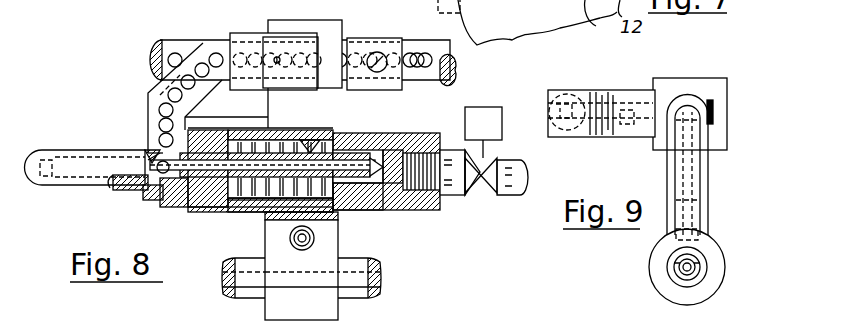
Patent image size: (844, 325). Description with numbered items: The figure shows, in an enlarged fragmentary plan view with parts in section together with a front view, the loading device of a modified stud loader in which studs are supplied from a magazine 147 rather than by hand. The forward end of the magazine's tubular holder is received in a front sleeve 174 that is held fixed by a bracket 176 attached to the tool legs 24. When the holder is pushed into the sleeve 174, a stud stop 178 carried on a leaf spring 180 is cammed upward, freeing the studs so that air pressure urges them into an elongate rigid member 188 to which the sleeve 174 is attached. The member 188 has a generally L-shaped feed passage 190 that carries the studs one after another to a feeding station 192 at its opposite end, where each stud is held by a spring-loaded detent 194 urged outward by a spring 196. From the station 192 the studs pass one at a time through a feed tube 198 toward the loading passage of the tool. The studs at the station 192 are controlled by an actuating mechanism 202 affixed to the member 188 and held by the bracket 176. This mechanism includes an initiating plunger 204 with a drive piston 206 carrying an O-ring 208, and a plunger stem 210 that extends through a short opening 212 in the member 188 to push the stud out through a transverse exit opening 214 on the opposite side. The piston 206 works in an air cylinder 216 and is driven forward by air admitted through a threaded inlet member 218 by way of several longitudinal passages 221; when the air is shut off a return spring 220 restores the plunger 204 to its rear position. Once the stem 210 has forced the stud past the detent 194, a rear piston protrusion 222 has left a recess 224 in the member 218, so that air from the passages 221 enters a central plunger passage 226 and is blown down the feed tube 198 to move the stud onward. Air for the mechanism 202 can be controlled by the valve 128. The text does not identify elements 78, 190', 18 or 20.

In FIG. 8, the tool legs 24 is at (167, 40).
In FIG. 8, the front sleeve 174 is at (245, 33).
In FIG. 8, the stud stop 178 is at (277, 58).
In FIG. 8, the leaf spring 180 is at (380, 15).
In FIG. 8, the ball 78 is at (417, 52).
In FIG. 9, the ball 78 is at (692, 274).
In FIG. 8, the magazine 147 is at (442, 88).
In FIG. 9, the magazine 147 is at (577, 96).
In FIG. 8, the valve 128 is at (482, 110).
In FIG. 8, the elongate rigid member 188 is at (150, 95).
In FIG. 9, the elongate rigid member 188 is at (632, 90).
In FIG. 8, the feed passage 190 is at (163, 98).
In FIG. 8, the short opening 212 is at (160, 148).
In FIG. 8, the transverse exit opening 214 is at (145, 160).
In FIG. 8, the drive piston 206 is at (312, 160).
In FIG. 8, the initiating plunger 204 is at (250, 133).
In FIG. 8, the central plunger passage 226 is at (310, 140).
In FIG. 8, the O-ring 208 is at (320, 148).
In FIG. 8, the actuating mechanism 202 is at (381, 132).
In FIG. 9, the actuating mechanism 202 is at (700, 80).
In FIG. 8, the rear piston protrusion 222 is at (378, 136).
In FIG. 8, the feed tube 198 is at (72, 187).
In FIG. 9, the feed tube 198 is at (708, 165).
In FIG. 8, the feeding station 192 is at (120, 190).
In FIG. 8, the spring-loaded detent 194 is at (128, 198).
In FIG. 8, the spring 196 is at (128, 210).
In FIG. 9, the spring 196 is at (716, 105).
In FIG. 8, the plunger stem 210 is at (218, 207).
In FIG. 8, the return spring 220 is at (240, 212).
In FIG. 8, the air cylinder 216 is at (265, 216).
In FIG. 8, the longitudinal passages 221 is at (345, 210).
In FIG. 8, the recess 224 is at (390, 205).
In FIG. 8, the threaded inlet member 218 is at (398, 213).
In FIG. 8, the bracket 176 is at (338, 245).
In FIG. 9, the ball tube 190' is at (611, 138).
In FIG. 9, the wheel 18 is at (700, 257).
In FIG. 9, the hub 20 is at (707, 267).